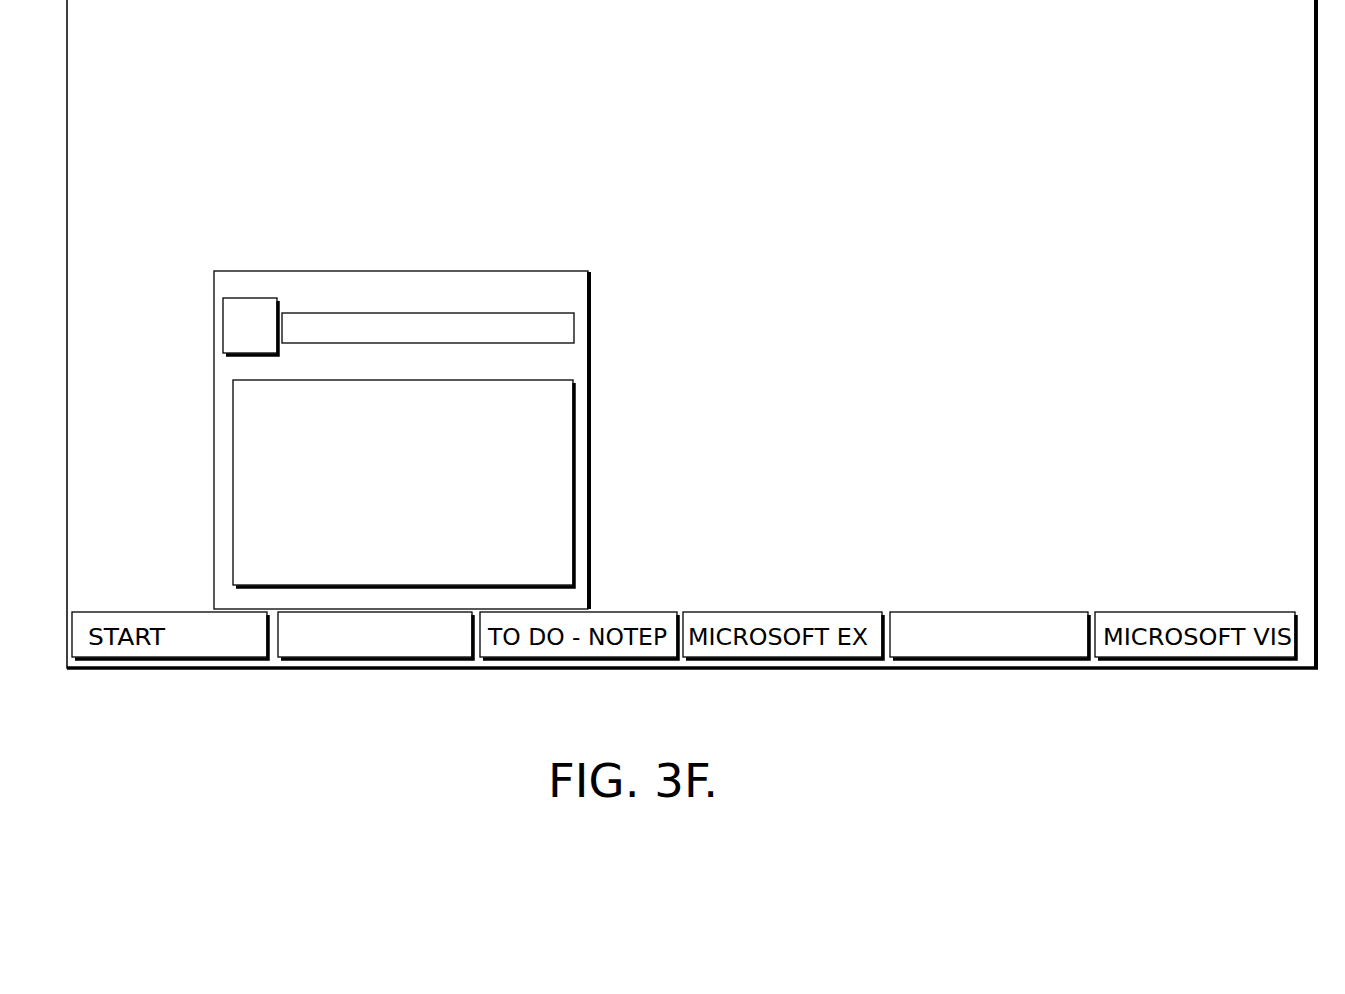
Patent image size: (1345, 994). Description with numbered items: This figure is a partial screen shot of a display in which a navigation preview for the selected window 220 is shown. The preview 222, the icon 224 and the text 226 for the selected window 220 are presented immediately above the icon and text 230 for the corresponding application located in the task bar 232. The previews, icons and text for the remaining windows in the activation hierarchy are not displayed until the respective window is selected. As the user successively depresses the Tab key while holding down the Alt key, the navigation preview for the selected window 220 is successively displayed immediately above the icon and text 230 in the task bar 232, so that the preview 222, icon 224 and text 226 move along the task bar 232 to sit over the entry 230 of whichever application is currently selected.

The selected window 220 is at (592, 490).
The preview 222 is at (577, 423).
The icon 224 is at (268, 297).
The text 226 is at (545, 313).
The icon and text for the application 230 is at (297, 659).
The task bar 232 is at (1022, 668).